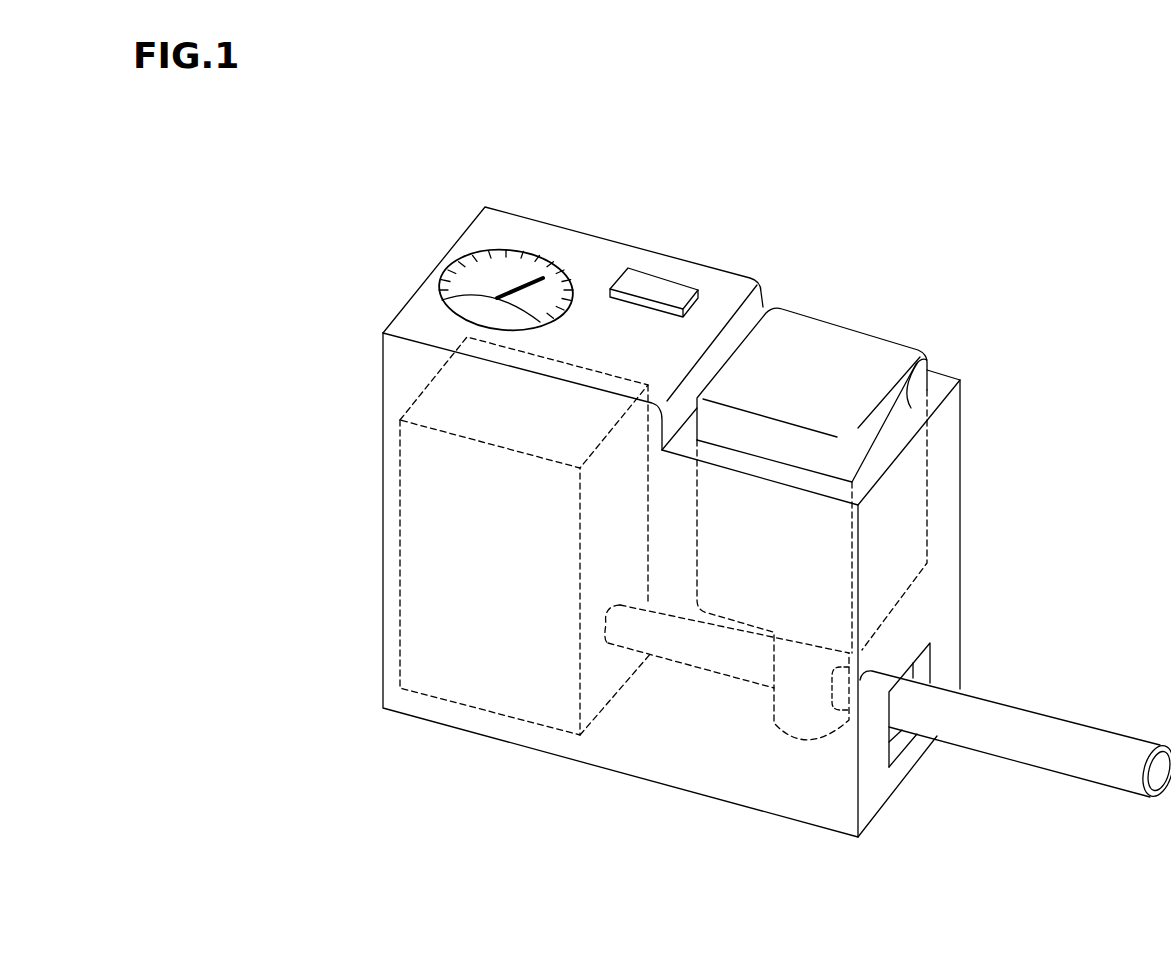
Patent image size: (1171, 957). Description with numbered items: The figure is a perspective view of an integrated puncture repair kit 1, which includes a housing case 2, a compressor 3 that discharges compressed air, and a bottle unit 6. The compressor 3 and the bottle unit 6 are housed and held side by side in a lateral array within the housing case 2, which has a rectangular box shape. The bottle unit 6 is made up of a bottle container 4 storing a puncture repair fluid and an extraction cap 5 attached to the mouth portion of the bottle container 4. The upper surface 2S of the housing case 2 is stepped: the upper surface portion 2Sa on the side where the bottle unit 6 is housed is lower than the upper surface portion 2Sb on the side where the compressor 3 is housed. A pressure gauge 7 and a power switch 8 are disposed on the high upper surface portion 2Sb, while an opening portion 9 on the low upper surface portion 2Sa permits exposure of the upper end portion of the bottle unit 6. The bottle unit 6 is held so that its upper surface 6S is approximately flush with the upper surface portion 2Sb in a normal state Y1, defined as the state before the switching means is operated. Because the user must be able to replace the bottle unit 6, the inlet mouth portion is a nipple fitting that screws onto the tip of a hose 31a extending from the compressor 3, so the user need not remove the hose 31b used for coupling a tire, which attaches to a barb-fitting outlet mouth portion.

The integrated puncture repair kit 1 is at (918, 290).
The normal state Y1 is at (983, 280).
The housing case 2 is at (962, 457).
The upper surface 2S is at (863, 203).
The upper surface portion 2Sa is at (750, 467).
The upper surface portion 2Sb is at (717, 297).
The compressor 3 is at (400, 495).
The bottle container 4 is at (927, 535).
The extraction cap 5 is at (850, 663).
The bottle unit 6 is at (1035, 515).
The upper surface 6S is at (849, 350).
The pressure gauge 7 is at (515, 273).
The power switch 8 is at (650, 287).
The opening portion 9 is at (927, 363).
The hose 31a is at (690, 667).
The hose 31b is at (1010, 740).